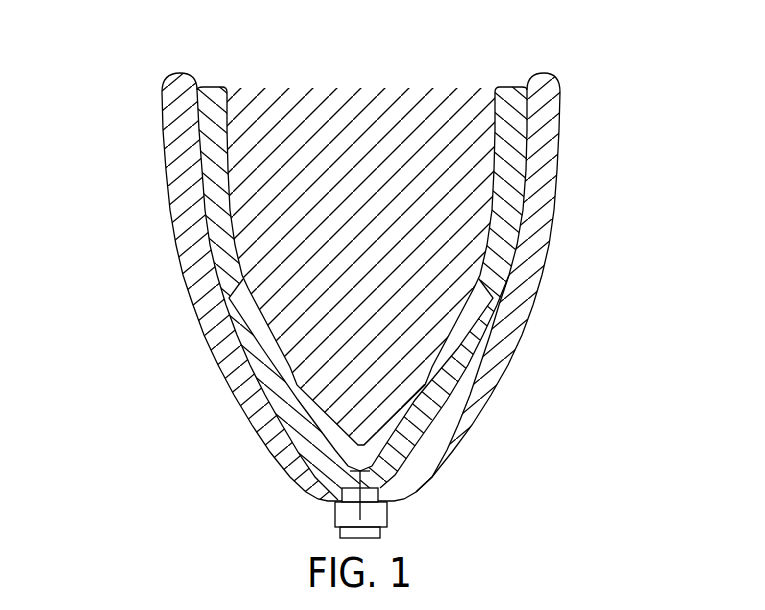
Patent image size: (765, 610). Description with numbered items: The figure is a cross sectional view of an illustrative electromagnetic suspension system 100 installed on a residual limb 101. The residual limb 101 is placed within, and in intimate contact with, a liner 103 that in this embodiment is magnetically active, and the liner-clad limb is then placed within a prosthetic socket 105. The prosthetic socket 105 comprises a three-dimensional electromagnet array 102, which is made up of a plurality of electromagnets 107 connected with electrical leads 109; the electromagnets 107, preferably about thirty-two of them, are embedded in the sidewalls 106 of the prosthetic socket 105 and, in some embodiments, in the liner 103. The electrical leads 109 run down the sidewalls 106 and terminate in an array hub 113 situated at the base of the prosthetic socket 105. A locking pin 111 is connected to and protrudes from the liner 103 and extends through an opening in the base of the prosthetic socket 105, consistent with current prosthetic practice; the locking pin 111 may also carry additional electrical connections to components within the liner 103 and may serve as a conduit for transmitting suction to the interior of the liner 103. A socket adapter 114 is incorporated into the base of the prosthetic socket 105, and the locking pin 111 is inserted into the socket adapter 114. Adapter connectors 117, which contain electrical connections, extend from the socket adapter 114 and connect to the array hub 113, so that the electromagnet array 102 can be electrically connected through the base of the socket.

The electromagnetic suspension system 100 is at (345, 289).
The residual limb 101 is at (392, 265).
The three-dimensional electromagnet array 102 is at (205, 281).
The liner 103 is at (201, 255).
The prosthetic socket 105 is at (504, 260).
The sidewalls 106 is at (283, 450).
The electromagnets 107 is at (438, 450).
The electrical leads 109 is at (530, 173).
The locking pin 111 is at (393, 442).
The array hub 113 is at (388, 492).
The socket adapter 114 is at (387, 522).
The adapter connectors 117 is at (380, 495).